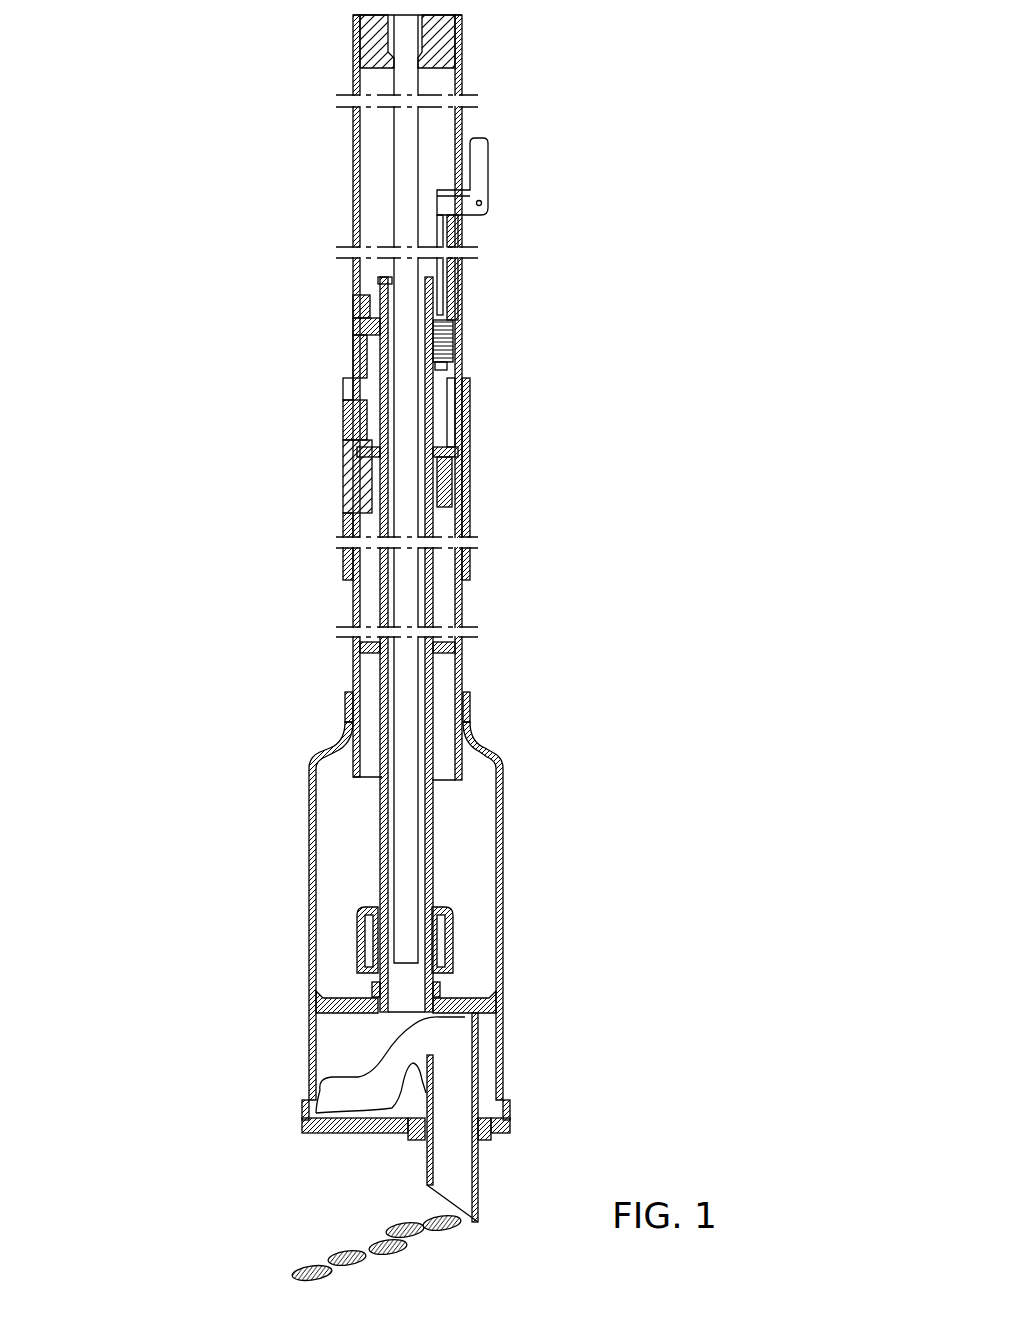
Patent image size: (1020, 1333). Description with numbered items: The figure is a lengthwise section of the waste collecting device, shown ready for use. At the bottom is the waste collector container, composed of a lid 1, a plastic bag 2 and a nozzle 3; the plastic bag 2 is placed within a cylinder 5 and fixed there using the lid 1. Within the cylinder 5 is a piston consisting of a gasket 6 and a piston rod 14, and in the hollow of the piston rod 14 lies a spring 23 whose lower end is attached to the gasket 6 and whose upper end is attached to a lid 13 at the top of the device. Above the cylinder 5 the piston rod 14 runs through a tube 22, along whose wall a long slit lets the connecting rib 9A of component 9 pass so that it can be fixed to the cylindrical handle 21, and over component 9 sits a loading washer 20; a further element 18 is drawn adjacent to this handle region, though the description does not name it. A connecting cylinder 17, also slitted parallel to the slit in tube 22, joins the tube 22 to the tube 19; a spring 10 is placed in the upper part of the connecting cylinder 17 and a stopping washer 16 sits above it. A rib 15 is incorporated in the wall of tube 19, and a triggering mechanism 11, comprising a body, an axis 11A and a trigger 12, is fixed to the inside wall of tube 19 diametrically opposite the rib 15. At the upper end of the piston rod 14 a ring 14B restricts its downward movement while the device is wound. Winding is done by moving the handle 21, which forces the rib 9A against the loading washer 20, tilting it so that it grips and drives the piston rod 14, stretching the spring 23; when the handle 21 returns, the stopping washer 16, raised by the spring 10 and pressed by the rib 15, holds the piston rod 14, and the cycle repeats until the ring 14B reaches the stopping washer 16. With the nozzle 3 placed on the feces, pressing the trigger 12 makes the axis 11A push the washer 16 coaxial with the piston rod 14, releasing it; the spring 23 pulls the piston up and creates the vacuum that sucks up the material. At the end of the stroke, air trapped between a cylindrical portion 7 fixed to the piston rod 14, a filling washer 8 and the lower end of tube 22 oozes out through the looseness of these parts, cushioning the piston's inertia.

The lid 1 is at (507, 1122).
The plastic bag 2 is at (393, 1105).
The nozzle 3 is at (438, 1065).
The cylinder 5 is at (503, 1001).
The gasket 6 is at (472, 993).
The cylindrical portion 7 is at (453, 927).
The filling washer 8 is at (453, 645).
The component 9 is at (460, 470).
The connecting rib 9A is at (348, 440).
The spring 10 is at (457, 350).
The triggering mechanism 11 is at (455, 240).
The axis 11A is at (455, 300).
The trigger 12 is at (487, 205).
The lid 13 is at (447, 62).
The piston rod 14 is at (378, 278).
The ring 14B is at (383, 272).
The rib 15 is at (353, 298).
The stopping washer 16 is at (353, 322).
The connecting cylinder 17 is at (350, 362).
The block 18 is at (348, 405).
The tube 19 is at (355, 123).
The loading washer 20 is at (356, 468).
The cylindrical handle 21 is at (345, 570).
The tube 22 is at (345, 685).
The spring 23 is at (400, 752).